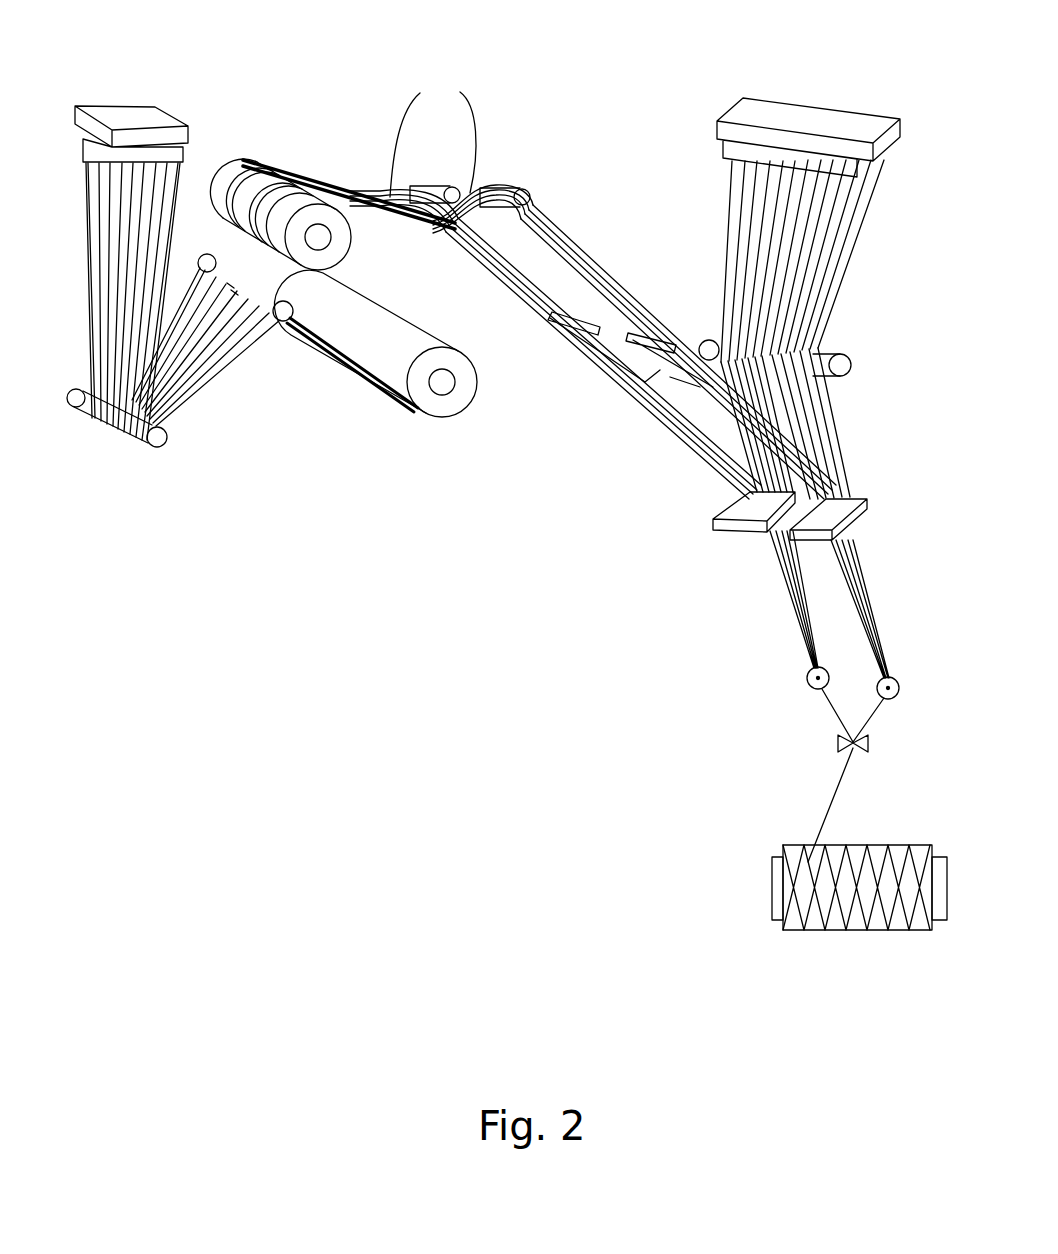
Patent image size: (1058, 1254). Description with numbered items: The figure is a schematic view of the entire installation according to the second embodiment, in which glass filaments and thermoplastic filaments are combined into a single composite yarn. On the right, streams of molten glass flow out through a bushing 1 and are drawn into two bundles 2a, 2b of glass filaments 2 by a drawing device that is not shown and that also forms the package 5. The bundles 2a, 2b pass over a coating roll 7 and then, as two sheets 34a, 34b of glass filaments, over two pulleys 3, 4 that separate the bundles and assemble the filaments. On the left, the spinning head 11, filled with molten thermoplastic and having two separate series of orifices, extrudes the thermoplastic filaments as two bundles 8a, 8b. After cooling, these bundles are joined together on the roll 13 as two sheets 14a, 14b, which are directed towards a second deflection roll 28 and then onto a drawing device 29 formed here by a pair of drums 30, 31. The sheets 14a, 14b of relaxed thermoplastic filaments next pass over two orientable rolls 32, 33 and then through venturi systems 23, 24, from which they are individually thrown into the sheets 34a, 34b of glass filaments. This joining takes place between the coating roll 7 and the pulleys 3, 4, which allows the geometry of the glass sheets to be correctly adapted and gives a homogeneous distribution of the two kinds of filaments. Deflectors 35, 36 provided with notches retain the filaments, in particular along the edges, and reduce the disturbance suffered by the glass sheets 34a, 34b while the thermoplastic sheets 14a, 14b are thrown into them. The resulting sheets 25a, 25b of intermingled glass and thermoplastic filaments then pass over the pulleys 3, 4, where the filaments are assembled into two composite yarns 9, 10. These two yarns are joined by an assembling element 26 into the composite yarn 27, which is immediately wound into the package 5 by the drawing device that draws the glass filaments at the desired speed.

The bushing 1 is at (893, 130).
The warp threads 2 is at (175, 165).
The bundle of glass filaments 2a is at (770, 248).
The bundle of glass filaments 2b is at (830, 276).
The pulley 3 is at (805, 672).
The pulley 4 is at (900, 688).
The package 5 is at (803, 910).
The coating roll 7 is at (842, 368).
The bundle of thermoplastic filaments 8a is at (97, 330).
The bundle of thermoplastic filaments 8b is at (160, 388).
The composite yarn 9 is at (835, 720).
The composite yarn 10 is at (880, 718).
The spinning head 11 is at (128, 98).
The roll 13 is at (158, 446).
The sheet of thermoplastic filaments 14a is at (214, 340).
The sheet of thermoplastic filaments 14b is at (575, 235).
The venturi system 23 is at (597, 360).
The venturi system 24 is at (677, 377).
The sheet of intermingled glass and thermoplastic filaments 25a is at (788, 608).
The sheet of intermingled glass and thermoplastic filaments 25b is at (862, 594).
The assembling element 26 is at (874, 745).
The composite yarn 27 is at (830, 806).
The second deflection roll 28 is at (302, 345).
The drawing device 29 is at (278, 100).
The drum 30 is at (347, 243).
The drum 31 is at (460, 390).
The orientable roll 32 is at (440, 187).
The orientable roll 33 is at (505, 187).
The sheet of glass filaments 34a is at (775, 416).
The sheet of glass filaments 34b is at (836, 455).
The deflector 35 is at (724, 531).
The deflector 36 is at (858, 508).